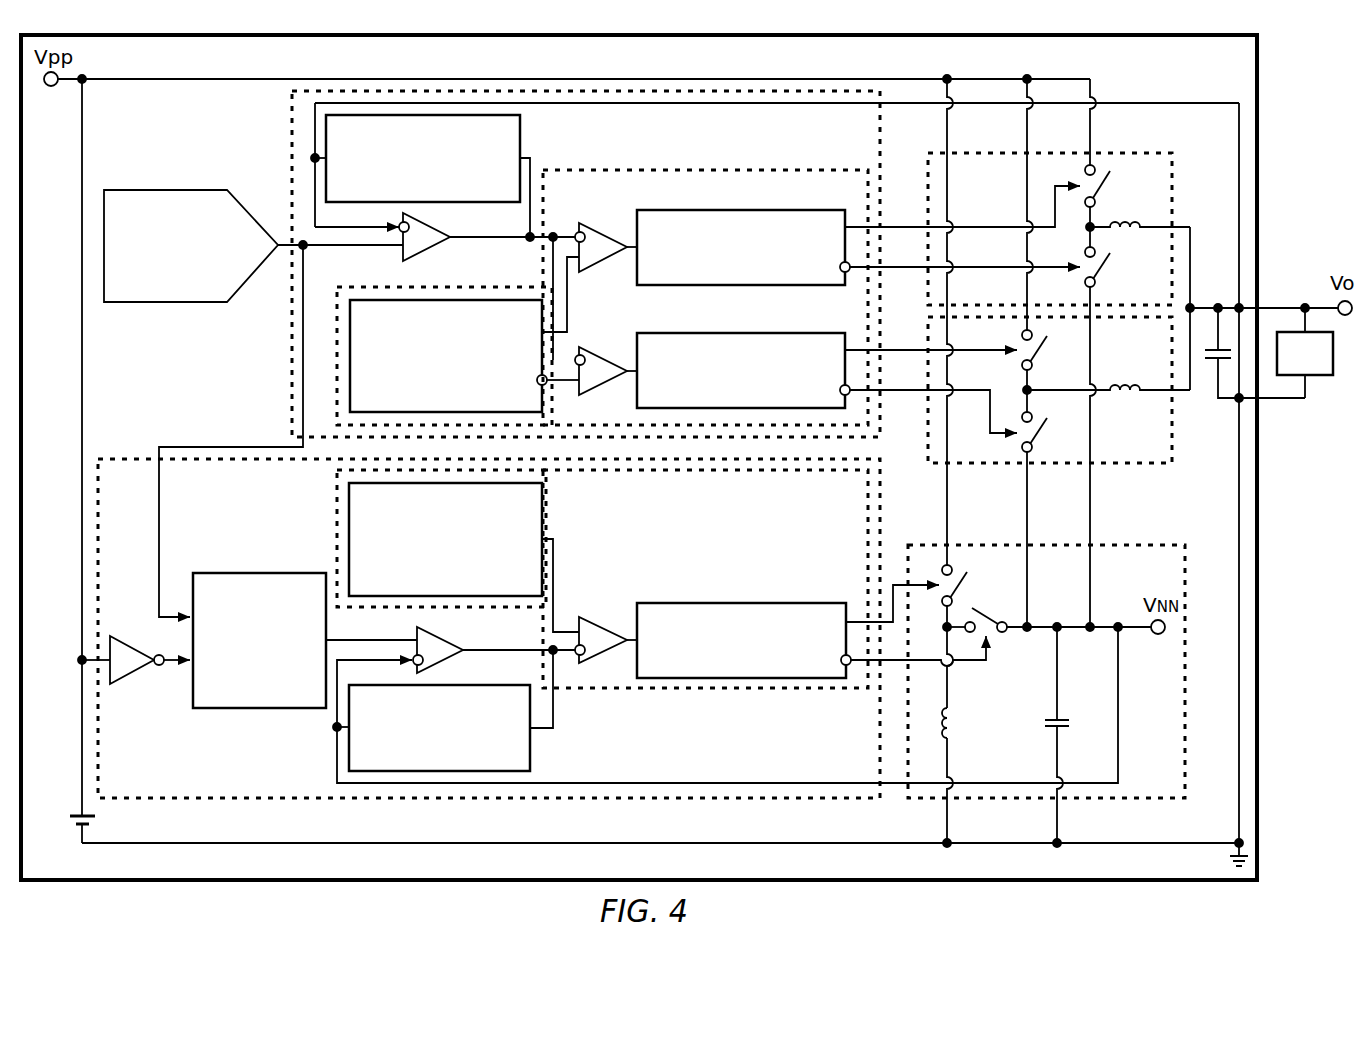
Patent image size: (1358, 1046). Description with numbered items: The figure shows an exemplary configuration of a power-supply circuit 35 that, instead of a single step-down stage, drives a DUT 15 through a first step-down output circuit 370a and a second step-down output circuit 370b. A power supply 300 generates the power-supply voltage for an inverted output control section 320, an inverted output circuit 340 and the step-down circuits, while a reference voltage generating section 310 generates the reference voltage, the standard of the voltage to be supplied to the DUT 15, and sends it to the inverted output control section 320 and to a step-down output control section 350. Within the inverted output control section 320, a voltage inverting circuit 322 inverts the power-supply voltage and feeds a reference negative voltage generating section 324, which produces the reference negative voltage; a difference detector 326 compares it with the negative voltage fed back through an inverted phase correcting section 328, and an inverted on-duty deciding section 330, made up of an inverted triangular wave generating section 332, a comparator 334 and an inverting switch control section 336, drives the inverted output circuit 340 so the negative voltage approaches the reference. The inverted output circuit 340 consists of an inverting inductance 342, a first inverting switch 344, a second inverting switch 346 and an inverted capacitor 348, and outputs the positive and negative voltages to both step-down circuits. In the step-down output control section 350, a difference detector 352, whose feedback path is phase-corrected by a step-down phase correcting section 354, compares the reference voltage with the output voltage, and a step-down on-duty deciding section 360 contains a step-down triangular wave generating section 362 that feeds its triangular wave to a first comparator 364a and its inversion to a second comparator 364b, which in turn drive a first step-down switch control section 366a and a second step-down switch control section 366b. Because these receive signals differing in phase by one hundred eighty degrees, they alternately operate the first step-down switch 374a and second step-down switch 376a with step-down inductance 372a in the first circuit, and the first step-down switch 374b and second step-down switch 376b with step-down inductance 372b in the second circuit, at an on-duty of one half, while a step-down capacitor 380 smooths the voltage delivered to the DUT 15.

The DUT 15 is at (1318, 375).
The power-supply circuit 35 is at (1258, 64).
The power supply 300 is at (98, 818).
The reference voltage generating section 310 is at (170, 190).
The inverted output control section 320 is at (440, 798).
The voltage inverting circuit 322 is at (132, 678).
The reference negative voltage generating section 324 is at (258, 573).
The difference detector 326 is at (444, 635).
The inverted phase correcting section 328 is at (530, 752).
The inverted on-duty deciding section 330 is at (708, 688).
The inverted triangular wave generating section 332 is at (542, 514).
The comparator 334 is at (600, 617).
The inverting switch control section 336 is at (735, 603).
The inverted output circuit 340 is at (1128, 798).
The inverting inductance 342 is at (953, 722).
The first inverting switch 344 is at (978, 608).
The second inverting switch 346 is at (963, 557).
The inverted capacitor 348 is at (1060, 718).
The step-down output control section 350 is at (292, 370).
The difference detector 352 is at (446, 226).
The step-down phase correcting section 354 is at (520, 138).
The step-down on-duty deciding section 360 is at (712, 170).
The step-down triangular wave generating section 362 is at (440, 287).
The first comparator 364a is at (600, 223).
The second comparator 364b is at (600, 347).
The first step-down switch control section 366a is at (735, 210).
The second step-down switch control section 366b is at (735, 333).
The first step-down output circuit 370a is at (1128, 153).
The second step-down output circuit 370b is at (1128, 463).
The step-down inductance 372a is at (1138, 222).
The step-down inductance 372b is at (1128, 385).
The first step-down switch 374a is at (1095, 282).
The first step-down switch 374b is at (1040, 440).
The second step-down switch 376a is at (1104, 186).
The second step-down switch 376b is at (1040, 348).
The step-down capacitor 380 is at (1212, 358).